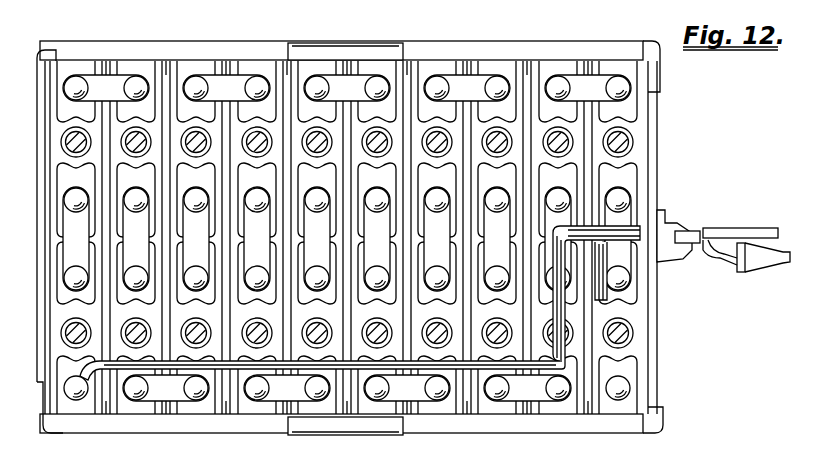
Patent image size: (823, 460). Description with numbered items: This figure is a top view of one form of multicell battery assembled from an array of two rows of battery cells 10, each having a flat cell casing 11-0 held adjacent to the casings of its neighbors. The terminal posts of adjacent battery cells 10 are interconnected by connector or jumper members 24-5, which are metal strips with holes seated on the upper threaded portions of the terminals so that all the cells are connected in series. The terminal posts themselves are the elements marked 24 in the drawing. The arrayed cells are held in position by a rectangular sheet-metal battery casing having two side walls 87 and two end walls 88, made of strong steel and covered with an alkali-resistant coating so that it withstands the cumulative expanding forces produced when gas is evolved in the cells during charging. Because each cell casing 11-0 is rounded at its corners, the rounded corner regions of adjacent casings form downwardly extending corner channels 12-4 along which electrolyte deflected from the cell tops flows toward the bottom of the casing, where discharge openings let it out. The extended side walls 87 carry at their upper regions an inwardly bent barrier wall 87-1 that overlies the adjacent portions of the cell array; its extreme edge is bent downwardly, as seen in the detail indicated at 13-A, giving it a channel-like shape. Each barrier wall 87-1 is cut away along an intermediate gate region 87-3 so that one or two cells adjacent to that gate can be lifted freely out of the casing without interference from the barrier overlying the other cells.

The battery cell 10 is at (55, 162).
The flat cell casing 11-0 is at (41, 62).
The corner channel 12-4 is at (108, 241).
The cell terminal 24 is at (622, 197).
The connector or jumper member 24-5 is at (112, 92).
The side wall 87 is at (560, 42).
The inwardly bent barrier wall 87-1 is at (617, 48).
The gate region 87-3 is at (397, 52).
The end wall 88 is at (657, 153).
The section indication for Fig. 13-A is at (672, 434).